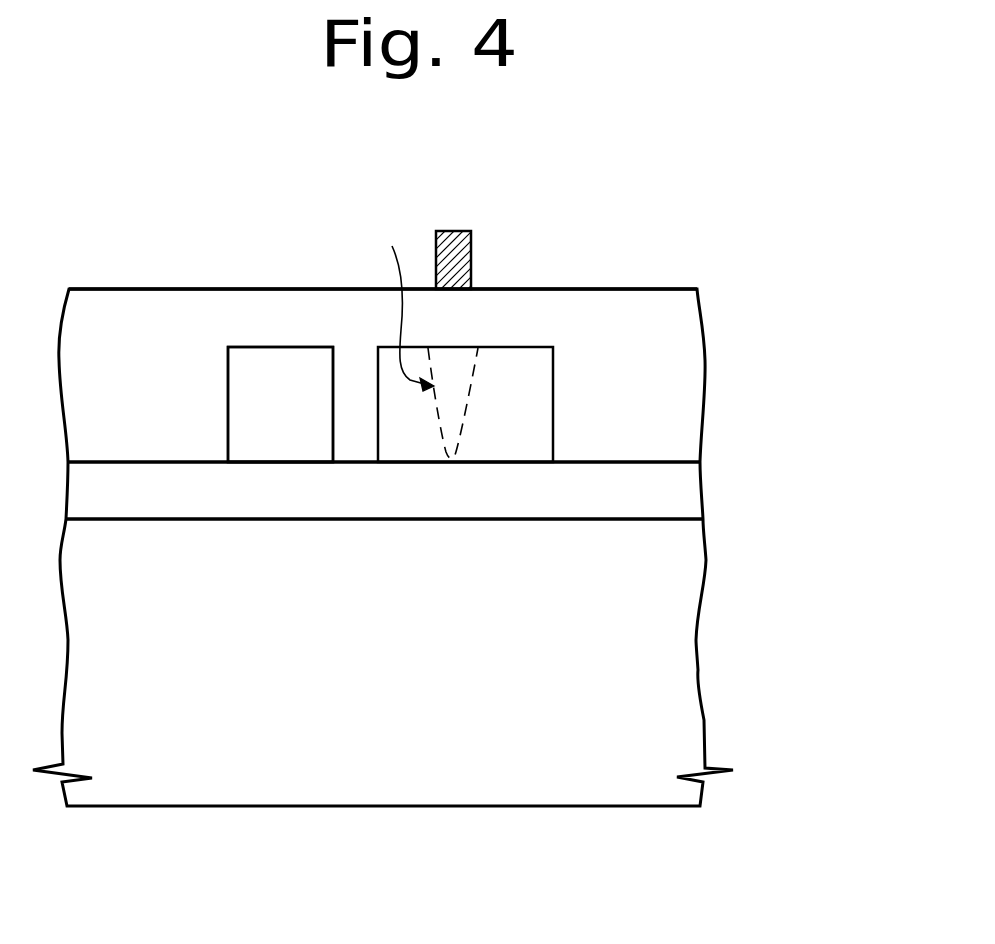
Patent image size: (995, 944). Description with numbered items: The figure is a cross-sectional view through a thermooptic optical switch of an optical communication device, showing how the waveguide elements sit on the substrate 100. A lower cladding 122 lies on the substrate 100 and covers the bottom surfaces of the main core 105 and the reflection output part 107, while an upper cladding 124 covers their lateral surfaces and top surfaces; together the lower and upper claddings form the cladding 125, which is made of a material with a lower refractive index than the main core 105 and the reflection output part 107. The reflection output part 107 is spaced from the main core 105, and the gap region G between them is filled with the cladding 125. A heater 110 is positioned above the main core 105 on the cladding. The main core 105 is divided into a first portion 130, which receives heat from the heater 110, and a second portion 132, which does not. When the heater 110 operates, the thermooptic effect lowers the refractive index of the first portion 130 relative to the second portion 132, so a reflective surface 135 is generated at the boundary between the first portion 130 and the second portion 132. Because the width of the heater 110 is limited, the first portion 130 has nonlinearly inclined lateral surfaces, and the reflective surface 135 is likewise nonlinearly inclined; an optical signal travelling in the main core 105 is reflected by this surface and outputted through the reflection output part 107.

The substrate 100 is at (675, 673).
The main core 105 is at (531, 346).
The reflection output part 107 is at (281, 346).
The heater 110 is at (452, 243).
The lower cladding 122 is at (675, 491).
The upper cladding 124 is at (675, 386).
The cladding 125 is at (820, 368).
The first portion 130 is at (457, 360).
The second portion 132 is at (405, 440).
The reflective surface 135 is at (398, 302).
The gap region G is at (333, 421).